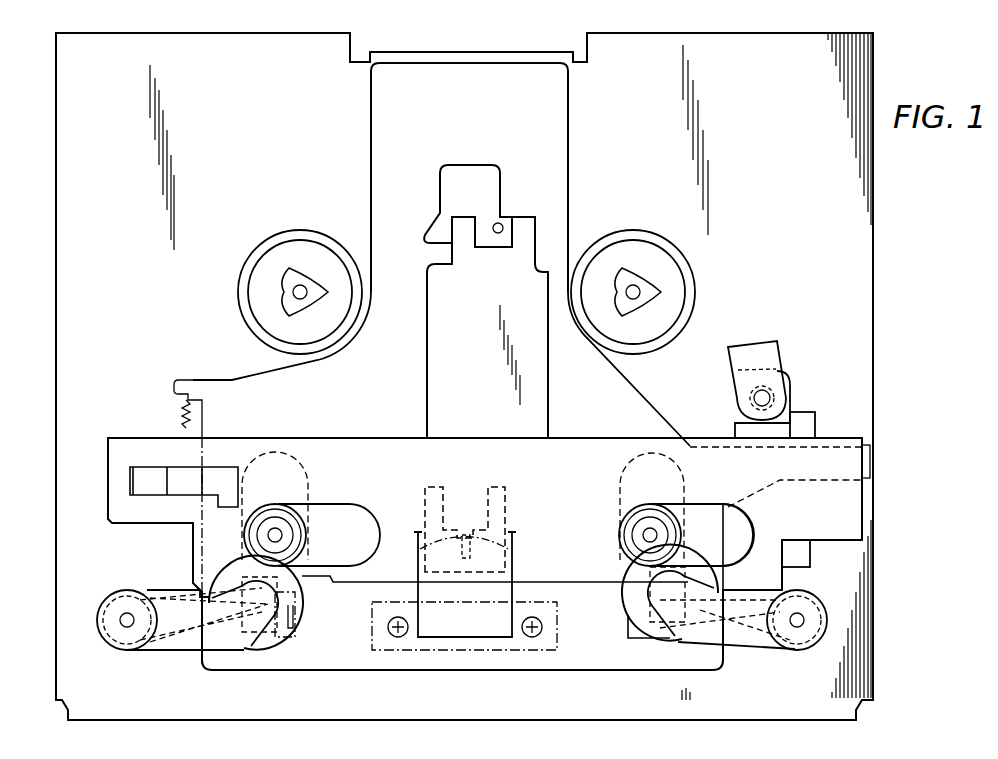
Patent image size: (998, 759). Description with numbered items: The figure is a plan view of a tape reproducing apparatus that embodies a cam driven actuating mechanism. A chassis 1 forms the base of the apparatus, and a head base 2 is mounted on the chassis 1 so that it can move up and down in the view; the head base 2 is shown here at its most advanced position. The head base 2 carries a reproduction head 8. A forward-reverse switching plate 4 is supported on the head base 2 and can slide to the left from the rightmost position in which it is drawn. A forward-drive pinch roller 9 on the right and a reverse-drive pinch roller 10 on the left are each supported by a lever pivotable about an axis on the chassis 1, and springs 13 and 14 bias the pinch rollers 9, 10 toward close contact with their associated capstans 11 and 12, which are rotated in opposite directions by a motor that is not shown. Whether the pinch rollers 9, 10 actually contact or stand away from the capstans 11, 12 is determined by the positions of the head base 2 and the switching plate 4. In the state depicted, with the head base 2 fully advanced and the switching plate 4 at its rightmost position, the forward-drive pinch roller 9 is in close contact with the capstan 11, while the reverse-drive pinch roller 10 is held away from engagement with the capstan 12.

The chassis 1 is at (264, 33).
The head base 2 is at (572, 658).
The forward-reverse switching plate 4 is at (353, 438).
The reproduction head 8 is at (466, 633).
The forward-drive pinch roller 9 is at (625, 572).
The reverse-drive pinch roller 10 is at (229, 560).
The capstan 11 is at (648, 527).
The capstan 12 is at (283, 535).
The spring 13 is at (780, 590).
The spring 14 is at (164, 596).